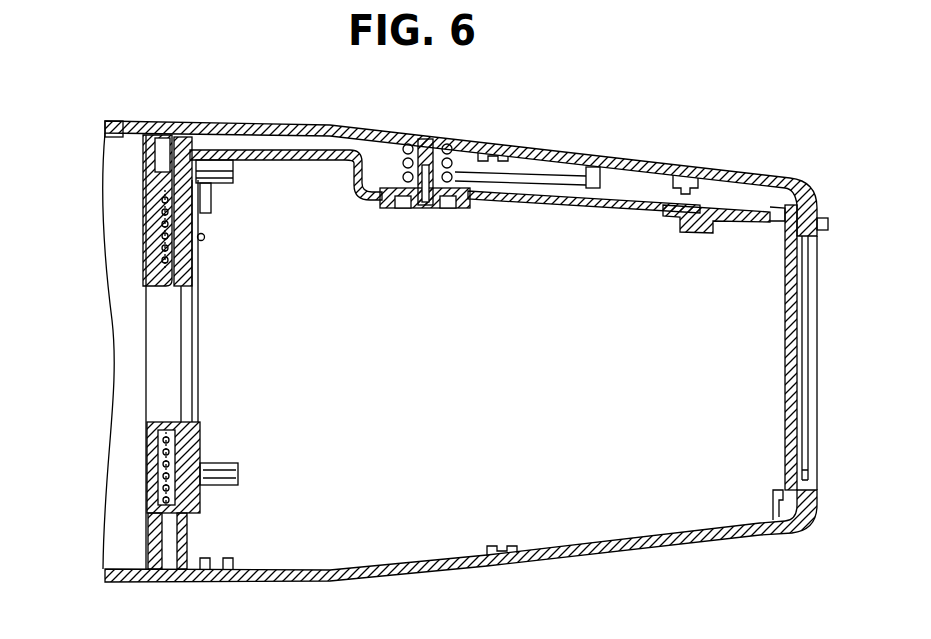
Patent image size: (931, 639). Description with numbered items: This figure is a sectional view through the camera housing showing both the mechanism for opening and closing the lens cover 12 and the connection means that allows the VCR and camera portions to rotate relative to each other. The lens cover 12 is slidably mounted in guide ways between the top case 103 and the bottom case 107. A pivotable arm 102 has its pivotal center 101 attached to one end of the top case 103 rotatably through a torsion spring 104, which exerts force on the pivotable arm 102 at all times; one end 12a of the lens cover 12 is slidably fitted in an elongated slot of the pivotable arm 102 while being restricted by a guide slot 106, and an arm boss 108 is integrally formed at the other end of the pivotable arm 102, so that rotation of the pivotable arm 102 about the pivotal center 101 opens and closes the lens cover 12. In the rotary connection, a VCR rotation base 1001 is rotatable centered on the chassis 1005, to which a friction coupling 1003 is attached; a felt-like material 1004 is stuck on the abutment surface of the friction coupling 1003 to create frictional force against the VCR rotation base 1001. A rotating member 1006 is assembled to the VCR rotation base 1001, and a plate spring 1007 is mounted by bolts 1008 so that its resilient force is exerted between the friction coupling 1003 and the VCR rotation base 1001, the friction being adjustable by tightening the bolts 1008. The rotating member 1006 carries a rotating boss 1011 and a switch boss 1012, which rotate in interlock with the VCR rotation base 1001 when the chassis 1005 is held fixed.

The lens cover 12 is at (798, 382).
The one end of the lens cover 12a is at (660, 205).
The pivotal center 101 is at (428, 210).
The pivotable arm 102 is at (608, 178).
The top case 103 is at (415, 140).
The torsion spring 104 is at (455, 150).
The guide slot 106 is at (683, 178).
The bottom case 107 is at (462, 566).
The arm boss 108 is at (208, 130).
The VCR rotation base 1001 is at (152, 270).
The friction coupling 1003 is at (157, 212).
The felt-like material 1004 is at (200, 493).
The chassis 1005 is at (162, 132).
The rotating member 1006 is at (200, 400).
The plate spring 1007 is at (198, 273).
The bolts 1008 is at (205, 237).
The rotating boss 1011 is at (272, 130).
The switch boss 1012 is at (223, 463).